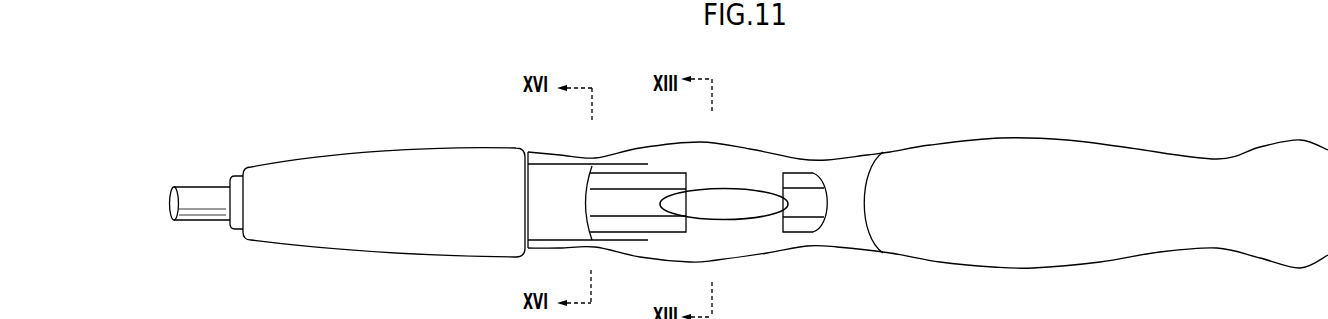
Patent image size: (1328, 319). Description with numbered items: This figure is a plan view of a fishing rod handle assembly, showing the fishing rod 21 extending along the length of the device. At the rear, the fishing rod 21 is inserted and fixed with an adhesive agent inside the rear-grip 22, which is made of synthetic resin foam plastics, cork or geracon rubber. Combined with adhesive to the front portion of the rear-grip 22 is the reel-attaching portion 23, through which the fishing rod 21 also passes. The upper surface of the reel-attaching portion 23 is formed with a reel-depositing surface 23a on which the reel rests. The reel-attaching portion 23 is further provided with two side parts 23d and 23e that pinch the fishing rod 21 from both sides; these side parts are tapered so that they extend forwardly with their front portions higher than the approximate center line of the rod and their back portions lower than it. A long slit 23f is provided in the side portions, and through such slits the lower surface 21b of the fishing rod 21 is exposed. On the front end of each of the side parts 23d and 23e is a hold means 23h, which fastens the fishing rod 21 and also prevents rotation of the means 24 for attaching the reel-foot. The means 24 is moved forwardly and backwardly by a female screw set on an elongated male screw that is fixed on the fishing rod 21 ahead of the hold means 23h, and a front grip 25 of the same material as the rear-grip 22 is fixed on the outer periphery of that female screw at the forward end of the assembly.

The fishing rod 21 is at (190, 184).
The lower surface of the fishing rod 21b is at (760, 208).
The rear-grip 22 is at (1020, 145).
The reel-attaching portion 23 is at (831, 156).
The reel-depositing surface 23a is at (696, 172).
The side part 23d is at (732, 262).
The side part 23e is at (743, 149).
The long slit 23f is at (736, 193).
The hold means 23h is at (538, 160).
The means for attaching the reel-foot 24 is at (570, 177).
The front grip 25 is at (363, 158).